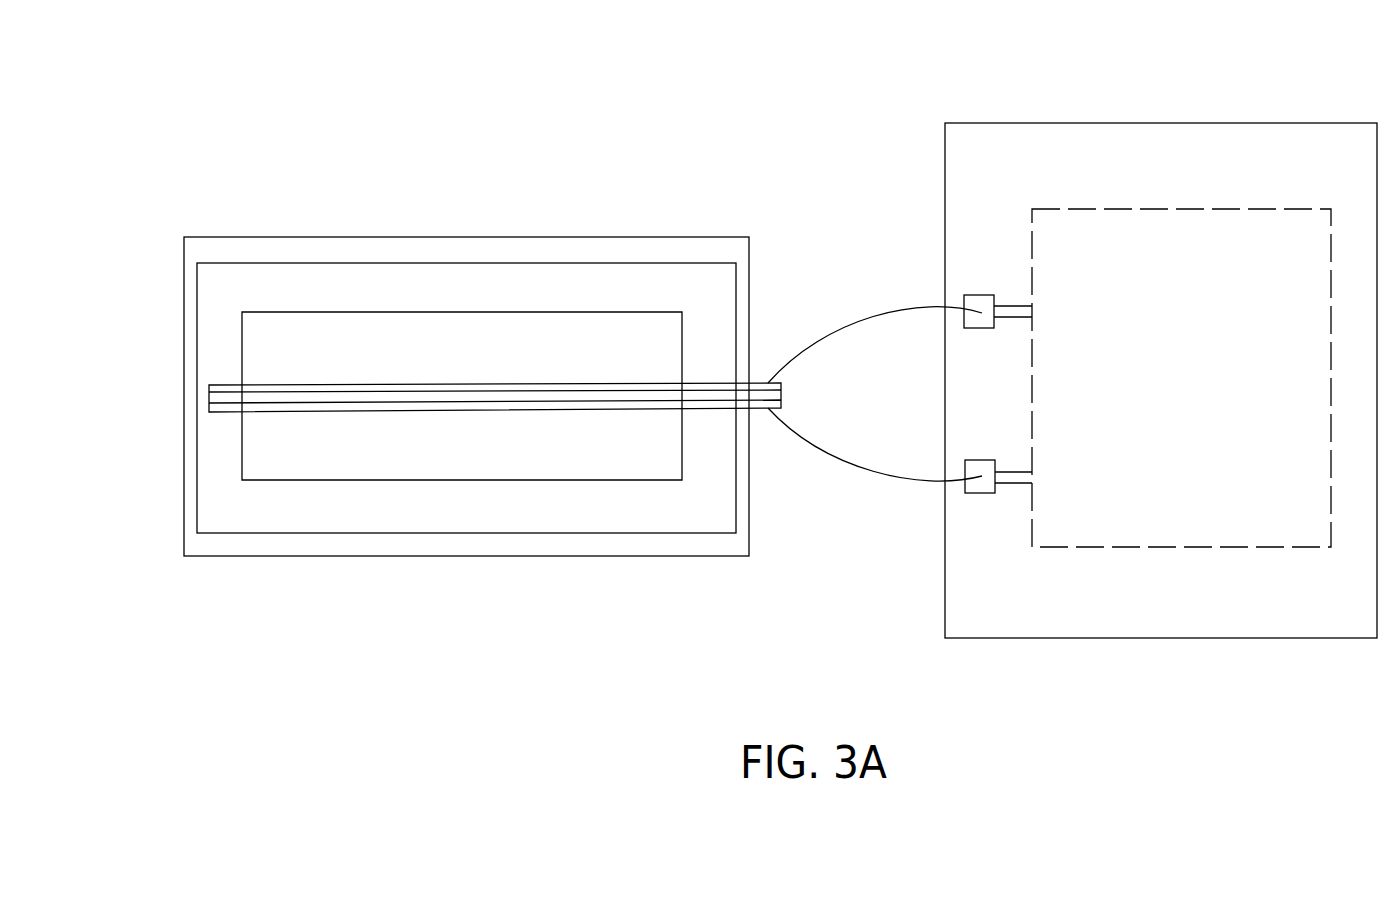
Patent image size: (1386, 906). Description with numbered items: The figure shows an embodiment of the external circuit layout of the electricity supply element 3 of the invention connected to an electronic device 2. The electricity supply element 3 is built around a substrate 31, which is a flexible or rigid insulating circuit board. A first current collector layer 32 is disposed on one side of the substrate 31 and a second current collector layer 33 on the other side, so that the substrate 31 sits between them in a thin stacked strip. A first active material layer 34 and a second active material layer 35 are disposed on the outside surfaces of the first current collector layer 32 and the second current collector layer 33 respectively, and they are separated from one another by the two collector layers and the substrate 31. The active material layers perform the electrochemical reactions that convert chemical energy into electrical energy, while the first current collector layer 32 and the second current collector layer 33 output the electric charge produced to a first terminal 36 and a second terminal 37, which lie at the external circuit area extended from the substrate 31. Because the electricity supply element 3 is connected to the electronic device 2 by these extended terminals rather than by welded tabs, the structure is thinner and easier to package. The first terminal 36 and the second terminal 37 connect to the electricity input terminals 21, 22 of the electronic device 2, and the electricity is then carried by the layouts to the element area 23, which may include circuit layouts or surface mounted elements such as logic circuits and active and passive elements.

The electronic device 2 is at (1040, 125).
The electricity supply element 3 is at (297, 183).
The electricity input terminal 21 is at (983, 298).
The electricity input terminal 22 is at (977, 495).
The element area 23 is at (1230, 225).
The substrate 31 is at (218, 397).
The first current collector layer 32 is at (355, 385).
The second current collector layer 33 is at (301, 412).
The first active material layer 34 is at (555, 312).
The second active material layer 35 is at (568, 480).
The first terminal 36 is at (758, 383).
The second terminal 37 is at (758, 408).